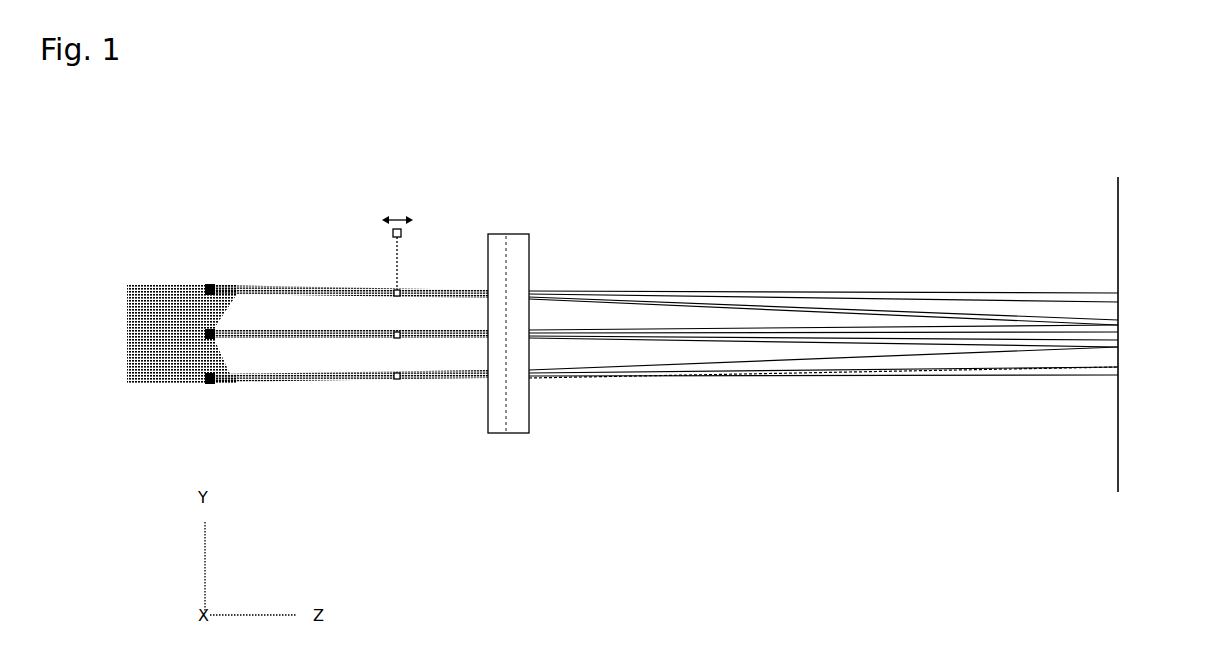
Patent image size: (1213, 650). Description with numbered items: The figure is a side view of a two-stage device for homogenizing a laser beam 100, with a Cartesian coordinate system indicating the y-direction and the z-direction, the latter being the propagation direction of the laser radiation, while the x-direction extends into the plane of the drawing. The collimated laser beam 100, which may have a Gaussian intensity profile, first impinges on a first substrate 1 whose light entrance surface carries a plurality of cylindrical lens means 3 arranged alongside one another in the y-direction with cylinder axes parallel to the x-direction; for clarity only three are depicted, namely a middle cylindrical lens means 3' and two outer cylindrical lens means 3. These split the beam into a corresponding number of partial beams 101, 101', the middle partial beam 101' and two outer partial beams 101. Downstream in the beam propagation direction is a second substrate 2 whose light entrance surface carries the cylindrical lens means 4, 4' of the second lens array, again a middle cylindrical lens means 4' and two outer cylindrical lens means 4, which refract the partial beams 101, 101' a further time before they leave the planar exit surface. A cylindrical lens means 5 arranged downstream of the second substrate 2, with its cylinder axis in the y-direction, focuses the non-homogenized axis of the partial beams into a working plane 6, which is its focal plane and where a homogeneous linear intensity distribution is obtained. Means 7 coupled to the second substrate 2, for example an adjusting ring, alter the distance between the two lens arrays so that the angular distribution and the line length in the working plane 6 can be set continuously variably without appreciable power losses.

The first substrate 1 is at (216, 264).
The laser beam 100 is at (115, 285).
The cylindrical lens means 3 is at (236, 354).
The middle cylindrical lens means 3' is at (239, 319).
The partial beams 101 is at (350, 326).
The middle partial beam 101' is at (350, 319).
The cylindrical lens means 4 is at (420, 315).
The middle cylindrical lens means 4' is at (417, 322).
The means for altering the distance 7 is at (404, 229).
The second substrate 2 is at (398, 398).
The cylindrical lens means 5 is at (513, 434).
The working plane 6 is at (1118, 466).